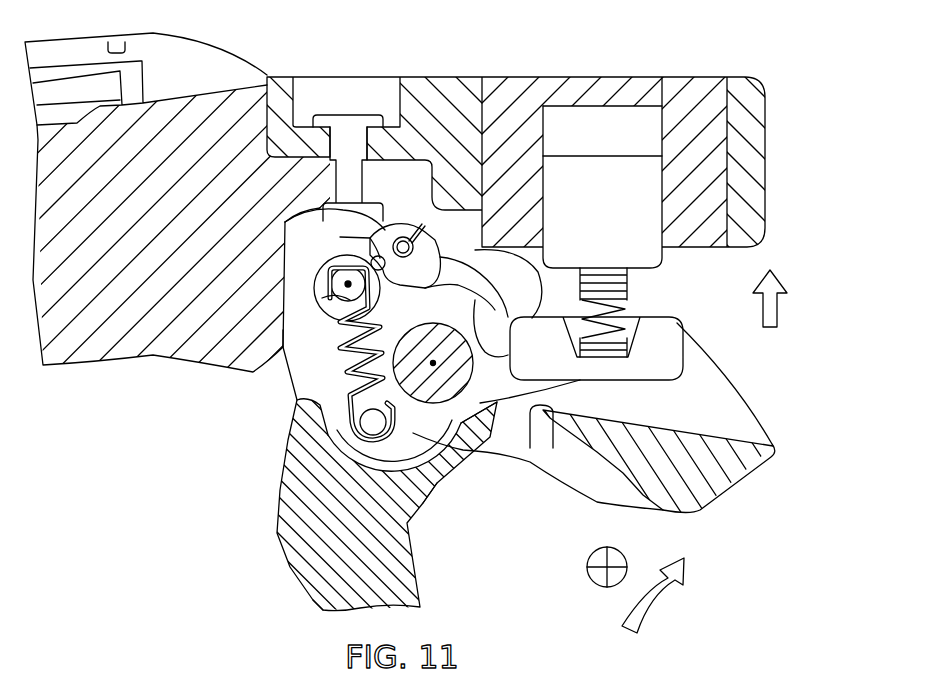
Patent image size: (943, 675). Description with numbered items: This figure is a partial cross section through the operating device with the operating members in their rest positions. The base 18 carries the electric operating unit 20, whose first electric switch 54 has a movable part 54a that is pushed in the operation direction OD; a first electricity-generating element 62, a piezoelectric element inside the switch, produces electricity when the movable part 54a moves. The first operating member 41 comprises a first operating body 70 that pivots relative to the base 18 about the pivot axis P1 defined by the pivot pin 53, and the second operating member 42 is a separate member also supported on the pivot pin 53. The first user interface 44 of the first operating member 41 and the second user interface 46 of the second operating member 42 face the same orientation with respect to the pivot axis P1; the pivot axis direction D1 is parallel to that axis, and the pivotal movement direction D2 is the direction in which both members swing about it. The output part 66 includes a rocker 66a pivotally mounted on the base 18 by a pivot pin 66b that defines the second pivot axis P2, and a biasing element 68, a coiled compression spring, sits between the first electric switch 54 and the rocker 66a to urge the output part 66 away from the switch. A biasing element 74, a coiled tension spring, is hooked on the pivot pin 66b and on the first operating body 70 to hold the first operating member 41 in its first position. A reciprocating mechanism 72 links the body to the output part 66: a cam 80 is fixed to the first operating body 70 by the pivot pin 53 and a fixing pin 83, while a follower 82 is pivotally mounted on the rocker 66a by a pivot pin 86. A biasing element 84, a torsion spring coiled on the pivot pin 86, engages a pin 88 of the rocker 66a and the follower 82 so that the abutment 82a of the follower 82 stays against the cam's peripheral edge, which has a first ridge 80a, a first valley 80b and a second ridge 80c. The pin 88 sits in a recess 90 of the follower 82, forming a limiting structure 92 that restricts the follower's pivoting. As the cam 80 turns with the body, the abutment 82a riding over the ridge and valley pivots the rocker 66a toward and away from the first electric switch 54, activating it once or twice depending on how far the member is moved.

The base 18 is at (152, 370).
The electric operating unit 20 is at (499, 138).
The first operating member 41 is at (370, 505).
The second operating member 42 is at (620, 436).
The first user interface 44 is at (300, 586).
The second user interface 46 is at (700, 510).
The pivot pin 53 is at (435, 485).
The first electric switch 54 is at (624, 198).
The movable part 54a is at (628, 275).
The first electricity-generating element 62 is at (618, 130).
The output part 66 is at (491, 336).
The rocker 66a is at (314, 262).
The pivot pin 66b is at (290, 213).
The biasing element 68 is at (620, 307).
The first operating body 70 is at (280, 483).
The reciprocating mechanism 72 is at (402, 287).
The biasing element 74 is at (340, 382).
The cam 80 is at (402, 315).
The first ridge 80a is at (287, 338).
The first valley 80b is at (432, 363).
The second ridge 80c is at (507, 353).
The follower 82 is at (380, 250).
The abutment 82a is at (322, 298).
The fixing pin 83 is at (348, 462).
The biasing element 84 is at (388, 222).
The pivot pin 86 is at (404, 237).
The pin 88 is at (340, 224).
The recess 90 is at (350, 222).
The limiting structure 92 is at (334, 116).
The pivot axis P1 is at (436, 366).
The second pivot axis P2 is at (346, 285).
The pivot axis direction D1 is at (592, 558).
The pivotal movement direction D2 is at (688, 613).
The operation direction OD is at (780, 312).